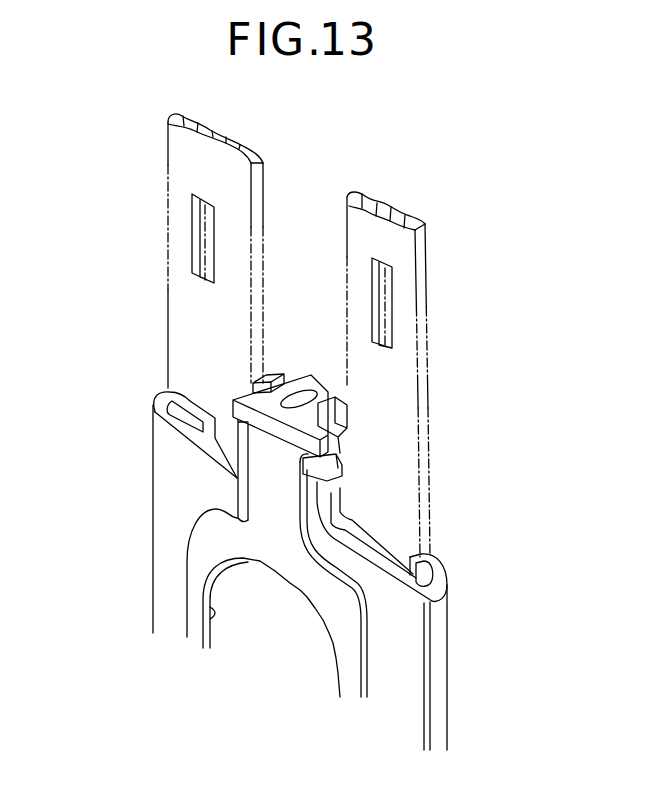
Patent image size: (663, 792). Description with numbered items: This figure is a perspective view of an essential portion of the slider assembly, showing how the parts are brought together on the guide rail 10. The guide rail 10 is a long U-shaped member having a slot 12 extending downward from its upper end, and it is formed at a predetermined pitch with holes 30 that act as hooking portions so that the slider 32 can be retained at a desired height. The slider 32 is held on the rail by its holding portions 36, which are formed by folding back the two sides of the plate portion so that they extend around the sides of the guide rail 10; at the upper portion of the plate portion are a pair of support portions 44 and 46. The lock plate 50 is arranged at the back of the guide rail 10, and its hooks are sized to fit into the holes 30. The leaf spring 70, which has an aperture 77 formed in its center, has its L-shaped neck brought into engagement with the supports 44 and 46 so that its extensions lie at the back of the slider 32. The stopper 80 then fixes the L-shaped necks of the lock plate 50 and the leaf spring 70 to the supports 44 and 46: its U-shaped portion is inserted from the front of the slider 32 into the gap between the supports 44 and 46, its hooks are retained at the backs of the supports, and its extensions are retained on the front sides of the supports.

The guide rail 10 is at (393, 392).
The slot 12 is at (322, 257).
The holes 30 is at (202, 256).
The slider 32 is at (400, 641).
The holding portions 36 is at (163, 395).
The support portion 44 is at (343, 424).
The support portion 46 is at (272, 374).
The lock plate 50 is at (374, 532).
The leaf spring 70 is at (198, 561).
The aperture 77 is at (211, 614).
The stopper 80 is at (247, 397).